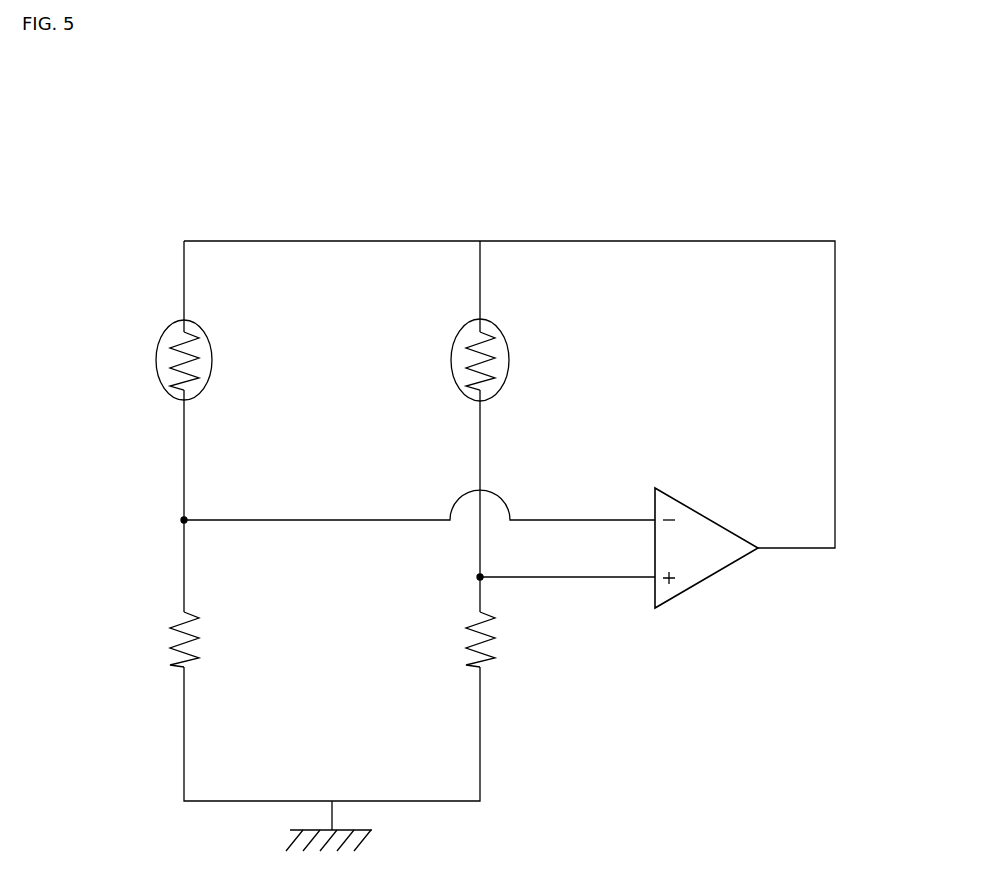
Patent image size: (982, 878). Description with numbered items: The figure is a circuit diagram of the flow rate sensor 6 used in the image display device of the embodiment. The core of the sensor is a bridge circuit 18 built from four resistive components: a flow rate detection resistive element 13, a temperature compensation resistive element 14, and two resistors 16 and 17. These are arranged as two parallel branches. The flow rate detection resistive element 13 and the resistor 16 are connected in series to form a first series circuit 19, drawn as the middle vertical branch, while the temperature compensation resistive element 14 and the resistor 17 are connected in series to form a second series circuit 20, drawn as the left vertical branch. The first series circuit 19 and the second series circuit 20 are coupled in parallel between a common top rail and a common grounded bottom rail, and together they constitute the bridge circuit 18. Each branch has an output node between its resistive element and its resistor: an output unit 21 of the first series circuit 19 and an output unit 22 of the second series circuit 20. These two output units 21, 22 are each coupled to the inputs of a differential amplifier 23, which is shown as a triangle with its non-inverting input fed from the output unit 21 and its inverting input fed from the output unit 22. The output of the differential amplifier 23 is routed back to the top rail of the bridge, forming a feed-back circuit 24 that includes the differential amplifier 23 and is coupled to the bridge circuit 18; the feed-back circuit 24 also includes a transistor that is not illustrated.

The flow rate sensor 6 is at (580, 178).
The flow rate detection resistive element 13 is at (452, 370).
The temperature compensation resistive element 14 is at (157, 362).
The resistor 16 is at (497, 632).
The resistor 17 is at (170, 644).
The bridge circuit 18 is at (361, 224).
The first series circuit 19 is at (480, 281).
The second series circuit 20 is at (184, 281).
The output unit 21 is at (478, 579).
The output unit 22 is at (181, 522).
The differential amplifier 23 is at (708, 588).
The feed-back circuit 24 is at (797, 230).